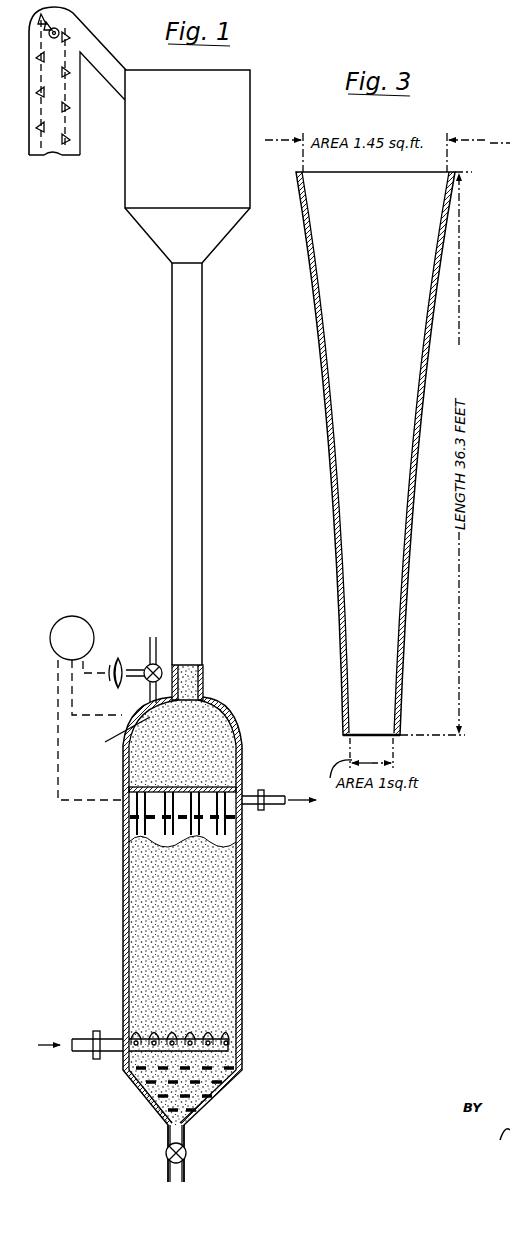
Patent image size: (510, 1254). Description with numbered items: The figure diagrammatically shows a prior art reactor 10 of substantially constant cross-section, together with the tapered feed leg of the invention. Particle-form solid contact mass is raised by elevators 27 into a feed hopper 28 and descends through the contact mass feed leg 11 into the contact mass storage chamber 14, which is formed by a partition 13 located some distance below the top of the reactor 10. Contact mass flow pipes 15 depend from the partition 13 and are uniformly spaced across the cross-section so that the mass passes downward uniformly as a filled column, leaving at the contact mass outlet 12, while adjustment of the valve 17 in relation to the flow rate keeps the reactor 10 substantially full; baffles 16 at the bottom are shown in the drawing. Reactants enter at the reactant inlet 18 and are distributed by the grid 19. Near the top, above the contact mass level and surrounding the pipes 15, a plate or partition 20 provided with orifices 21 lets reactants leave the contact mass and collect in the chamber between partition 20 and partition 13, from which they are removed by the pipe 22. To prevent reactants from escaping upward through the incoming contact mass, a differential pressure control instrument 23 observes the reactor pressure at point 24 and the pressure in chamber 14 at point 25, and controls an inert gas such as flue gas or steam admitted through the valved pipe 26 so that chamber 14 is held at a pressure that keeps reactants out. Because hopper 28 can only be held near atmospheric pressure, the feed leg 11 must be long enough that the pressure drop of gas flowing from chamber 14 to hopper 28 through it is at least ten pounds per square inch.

The reactor 10 is at (242, 899).
The contact mass feed leg 11 is at (203, 681).
The contact mass outlet 12 is at (186, 1138).
The partition 13 is at (212, 787).
The contact mass storage chamber 14 is at (205, 759).
The contact mass flow pipes 15 is at (168, 838).
The baffles in cone section 16 is at (225, 1081).
The valve 17 is at (190, 1157).
The reactant inlet 18 is at (82, 1038).
The grid 19 is at (190, 1040).
The plate or partition 20 is at (123, 813).
The orifices 21 is at (185, 825).
The pipe 22 is at (278, 806).
The differential pressure control instrument 23 is at (86, 665).
The reactor pressure observation point 24 is at (92, 794).
The chamber pressure observation point 25 is at (116, 739).
The valved pipe 26 is at (150, 642).
The elevators 27 is at (72, 153).
The feed hopper 28 is at (125, 197).